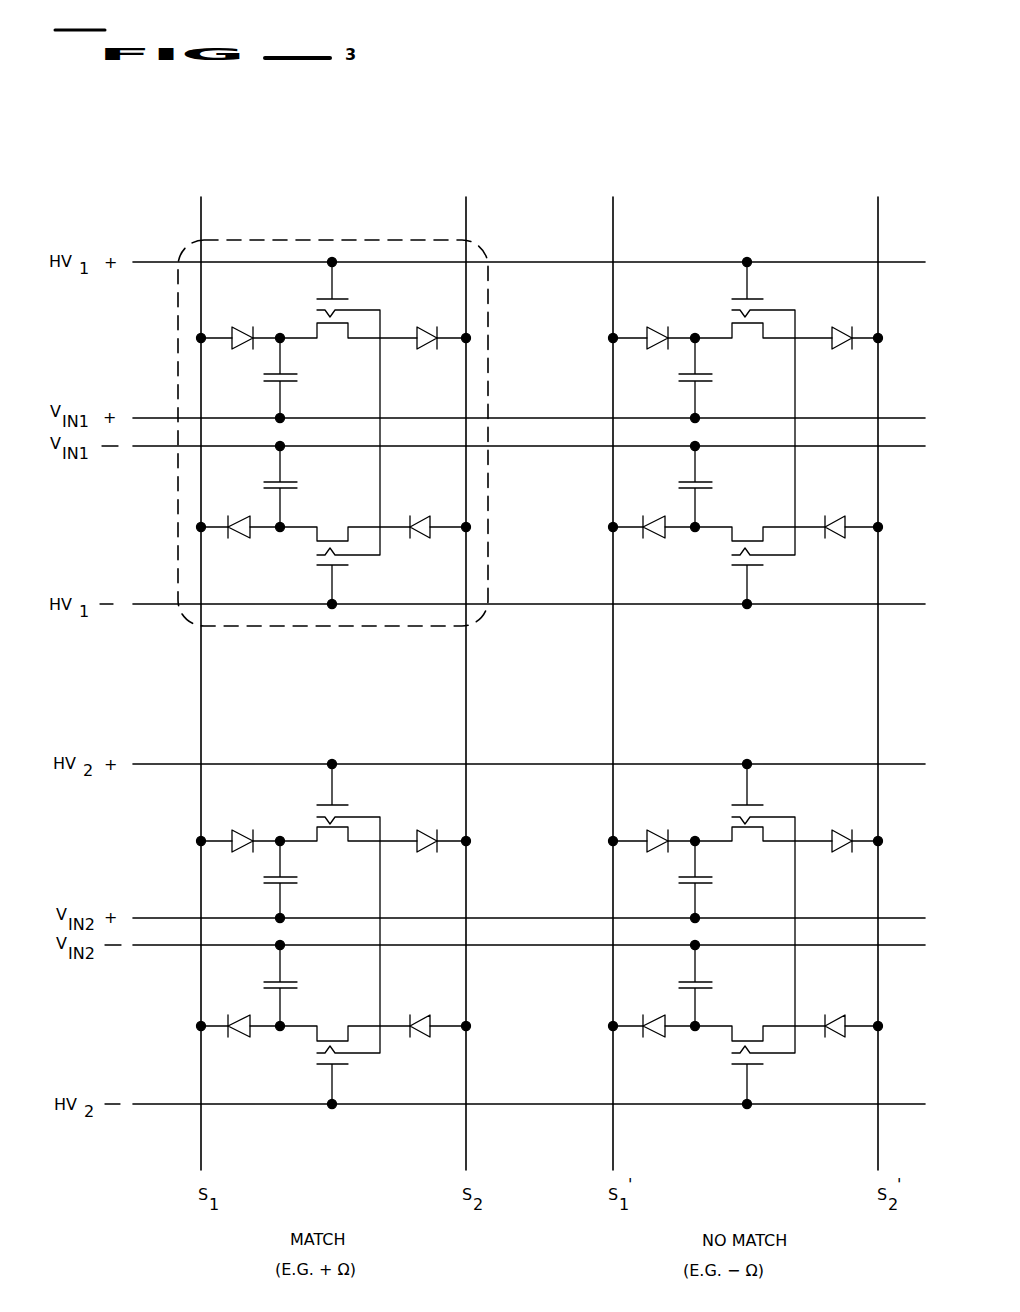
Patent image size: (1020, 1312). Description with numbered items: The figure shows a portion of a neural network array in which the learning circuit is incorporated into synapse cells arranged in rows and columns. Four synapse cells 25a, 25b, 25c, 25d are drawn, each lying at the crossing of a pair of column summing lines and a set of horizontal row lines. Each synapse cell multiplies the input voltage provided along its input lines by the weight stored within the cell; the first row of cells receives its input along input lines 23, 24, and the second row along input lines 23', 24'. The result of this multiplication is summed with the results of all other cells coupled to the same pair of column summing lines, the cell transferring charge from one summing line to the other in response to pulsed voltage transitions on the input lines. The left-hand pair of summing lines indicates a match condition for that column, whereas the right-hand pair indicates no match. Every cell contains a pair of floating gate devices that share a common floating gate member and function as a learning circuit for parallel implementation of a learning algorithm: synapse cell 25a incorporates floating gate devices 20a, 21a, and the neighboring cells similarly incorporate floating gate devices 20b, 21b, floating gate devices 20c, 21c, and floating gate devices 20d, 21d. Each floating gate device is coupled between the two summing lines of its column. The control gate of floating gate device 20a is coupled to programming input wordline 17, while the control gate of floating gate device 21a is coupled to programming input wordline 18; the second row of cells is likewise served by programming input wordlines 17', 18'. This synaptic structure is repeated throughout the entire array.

The programming input wordline 17 is at (529, 239).
The programming input wordline 18 is at (529, 580).
The programming input wordline 17' is at (529, 743).
The programming input wordline 18' is at (529, 1124).
The input line 23 is at (518, 397).
The input line 24 is at (516, 473).
The input line 23' is at (526, 894).
The input line 24' is at (526, 972).
The floating gate device 20a is at (334, 334).
The floating gate device 20b is at (749, 334).
The floating gate device 20c is at (334, 837).
The floating gate device 20d is at (749, 837).
The floating gate device 21a is at (332, 530).
The floating gate device 21b is at (747, 530).
The floating gate device 21c is at (332, 1029).
The floating gate device 21d is at (747, 1029).
The synapse cell 25a is at (256, 236).
The synapse cell 25b is at (753, 223).
The synapse cell 25c is at (322, 1119).
The synapse cell 25d is at (752, 1119).